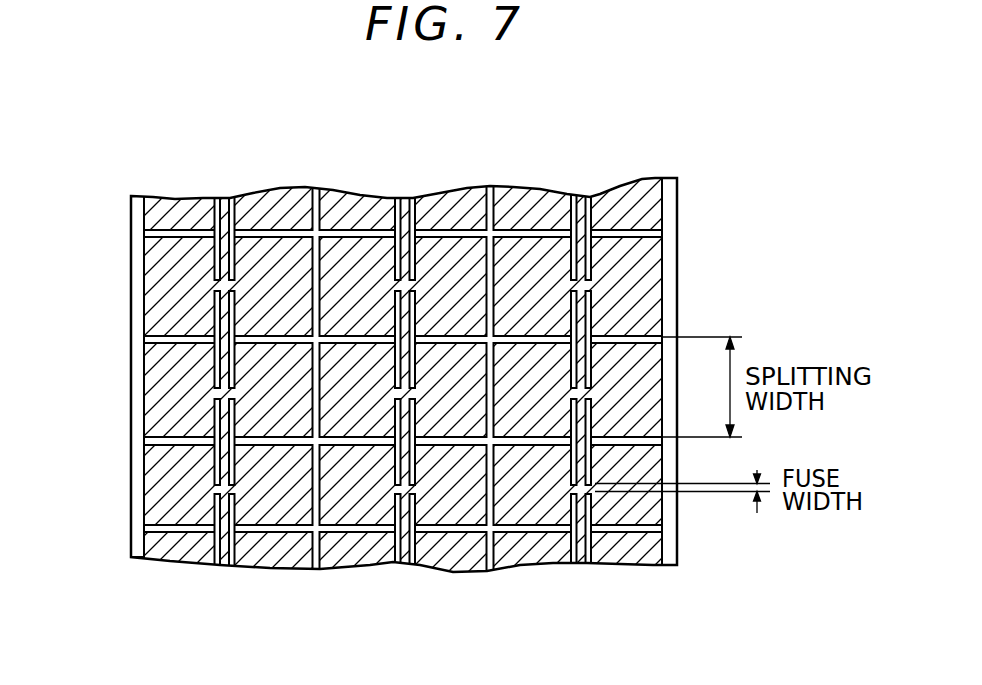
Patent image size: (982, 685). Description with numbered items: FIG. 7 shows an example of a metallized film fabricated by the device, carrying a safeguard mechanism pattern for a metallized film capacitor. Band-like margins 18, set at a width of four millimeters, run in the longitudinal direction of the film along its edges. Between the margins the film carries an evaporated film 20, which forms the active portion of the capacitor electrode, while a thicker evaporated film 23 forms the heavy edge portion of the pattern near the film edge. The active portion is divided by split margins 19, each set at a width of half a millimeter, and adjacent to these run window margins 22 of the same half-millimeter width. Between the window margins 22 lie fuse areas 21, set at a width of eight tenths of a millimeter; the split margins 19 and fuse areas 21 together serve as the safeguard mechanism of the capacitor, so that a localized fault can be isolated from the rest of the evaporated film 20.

The margin 18 is at (133, 380).
The split margin 19 is at (192, 227).
The evaporated film (active portion) 20 is at (360, 267).
The fuse area 21 is at (590, 283).
The window margin 22 is at (572, 255).
The evaporated film (heavy edge portion) 23 is at (600, 193).